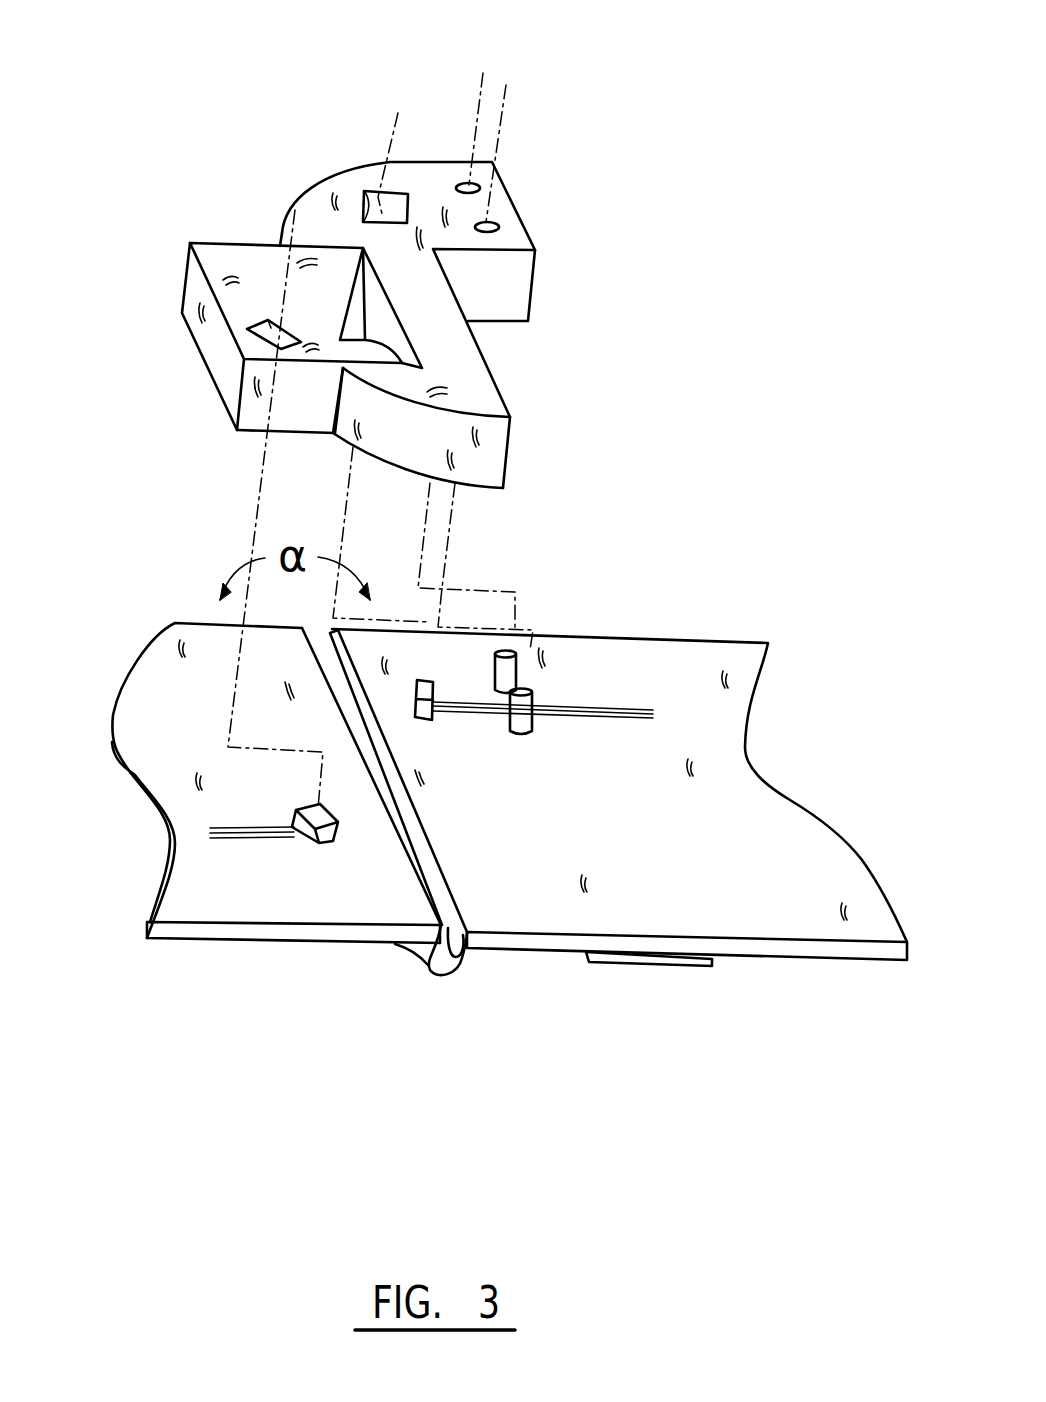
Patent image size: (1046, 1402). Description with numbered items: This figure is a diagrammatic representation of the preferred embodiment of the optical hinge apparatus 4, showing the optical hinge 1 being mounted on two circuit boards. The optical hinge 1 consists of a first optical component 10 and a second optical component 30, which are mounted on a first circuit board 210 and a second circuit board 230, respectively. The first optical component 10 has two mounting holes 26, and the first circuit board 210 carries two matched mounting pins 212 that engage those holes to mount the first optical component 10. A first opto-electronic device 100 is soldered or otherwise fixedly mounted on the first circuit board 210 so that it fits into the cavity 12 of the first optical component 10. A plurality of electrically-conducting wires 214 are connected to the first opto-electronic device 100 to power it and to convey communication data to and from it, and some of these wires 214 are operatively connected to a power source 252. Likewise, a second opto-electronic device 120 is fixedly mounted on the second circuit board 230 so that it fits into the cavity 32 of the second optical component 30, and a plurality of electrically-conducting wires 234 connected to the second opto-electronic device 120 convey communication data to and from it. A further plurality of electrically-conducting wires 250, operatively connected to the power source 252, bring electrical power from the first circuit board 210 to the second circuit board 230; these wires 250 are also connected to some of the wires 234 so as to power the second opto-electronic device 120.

The optical hinge 1 is at (205, 148).
The optical hinge apparatus 4 is at (825, 278).
The first optical component 10 is at (443, 332).
The cavity 12 is at (378, 190).
The mounting holes 26 is at (483, 180).
The second optical component 30 is at (237, 283).
The cavity 32 is at (300, 341).
The first opto-electronic device 100 is at (435, 682).
The second opto-electronic device 120 is at (332, 841).
The first circuit board 210 is at (746, 798).
The mounting pins 212 is at (507, 650).
The electrically-conducting wires 214 is at (667, 706).
The second circuit board 230 is at (347, 950).
The electrically-conducting wires 234 is at (277, 843).
The electrically-conducting wires 250 is at (445, 979).
The power source 252 is at (650, 960).